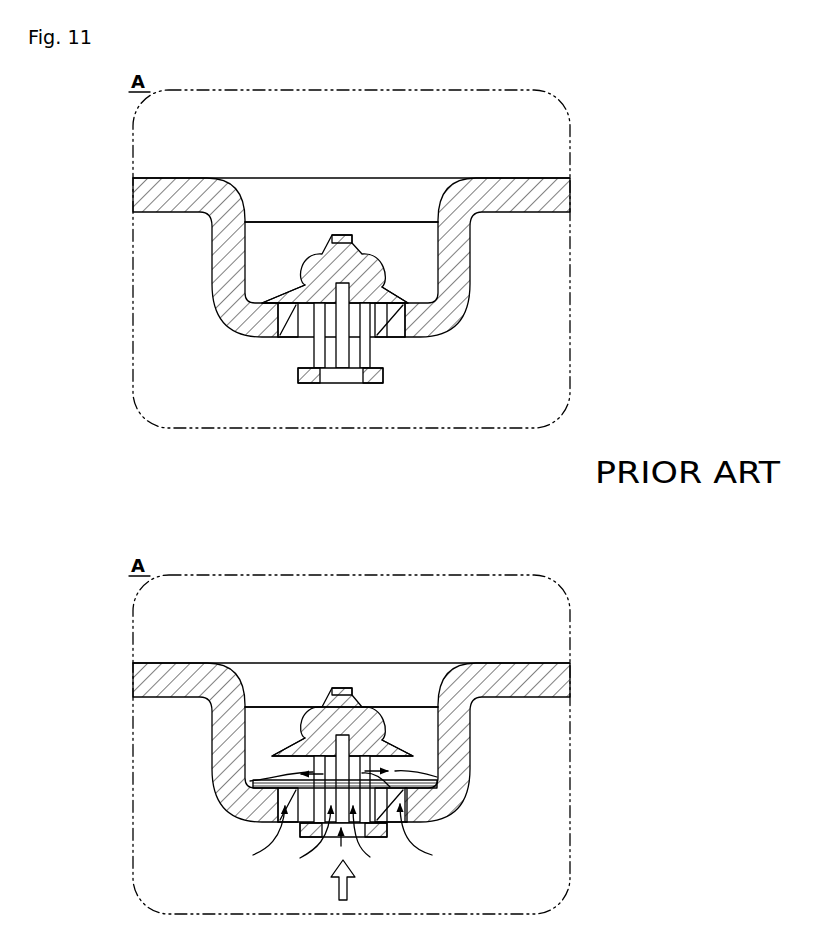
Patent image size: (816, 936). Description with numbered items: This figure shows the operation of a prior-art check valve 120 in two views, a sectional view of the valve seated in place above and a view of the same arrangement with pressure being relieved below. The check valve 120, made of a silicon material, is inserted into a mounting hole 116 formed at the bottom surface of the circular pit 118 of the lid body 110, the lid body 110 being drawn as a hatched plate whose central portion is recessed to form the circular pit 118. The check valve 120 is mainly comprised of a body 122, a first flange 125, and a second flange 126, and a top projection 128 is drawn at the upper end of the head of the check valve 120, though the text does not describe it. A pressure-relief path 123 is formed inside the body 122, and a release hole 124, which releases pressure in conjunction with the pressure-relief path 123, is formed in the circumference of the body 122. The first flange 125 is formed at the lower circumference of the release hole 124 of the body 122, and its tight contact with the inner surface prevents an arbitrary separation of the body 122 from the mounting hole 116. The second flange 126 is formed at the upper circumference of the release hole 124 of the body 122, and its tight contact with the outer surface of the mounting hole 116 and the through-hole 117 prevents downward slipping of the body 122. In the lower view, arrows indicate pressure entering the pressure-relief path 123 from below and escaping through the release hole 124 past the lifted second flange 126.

The lid body 110 is at (162, 178).
The mounting hole 116 is at (373, 338).
The through-hole 117 is at (285, 330).
The circular pit 118 is at (282, 237).
The check valve 120 is at (303, 267).
The body 122 is at (373, 360).
The pressure-relief path 123 is at (340, 380).
The release hole 124 is at (277, 793).
The first flange 125 is at (385, 378).
The second flange 126 is at (400, 298).
The top projection of clip head 128 is at (343, 235).